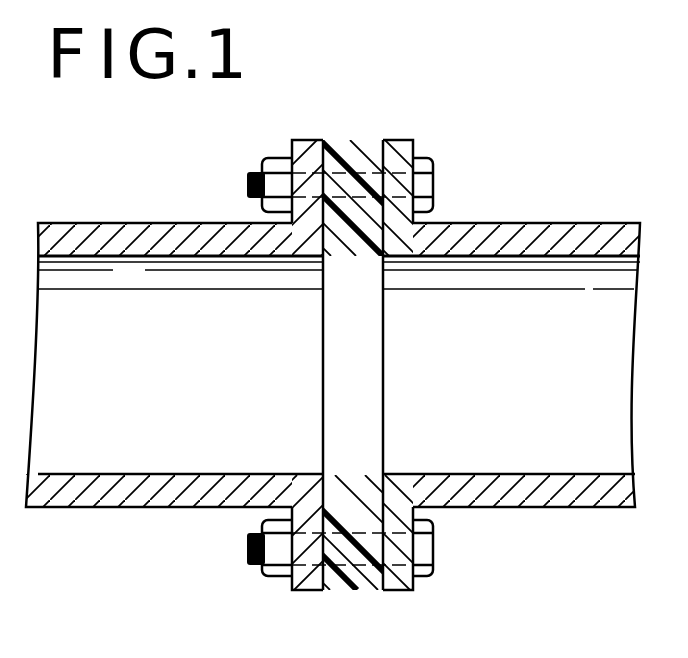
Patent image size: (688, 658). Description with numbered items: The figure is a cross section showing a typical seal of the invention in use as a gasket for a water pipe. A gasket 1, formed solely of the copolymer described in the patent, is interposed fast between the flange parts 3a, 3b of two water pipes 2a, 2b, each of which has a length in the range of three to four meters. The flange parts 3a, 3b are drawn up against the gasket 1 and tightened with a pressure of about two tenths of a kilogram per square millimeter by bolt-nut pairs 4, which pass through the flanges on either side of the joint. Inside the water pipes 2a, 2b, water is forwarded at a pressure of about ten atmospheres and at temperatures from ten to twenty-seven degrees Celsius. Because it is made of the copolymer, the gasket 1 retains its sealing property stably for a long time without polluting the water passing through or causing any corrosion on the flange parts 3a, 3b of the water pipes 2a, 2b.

The gasket 1 is at (347, 140).
The water pipe 2a is at (132, 232).
The water pipe 2b is at (562, 235).
The flange part 3a is at (304, 140).
The flange part 3b is at (396, 140).
The bolt-nut pair 4 is at (425, 184).